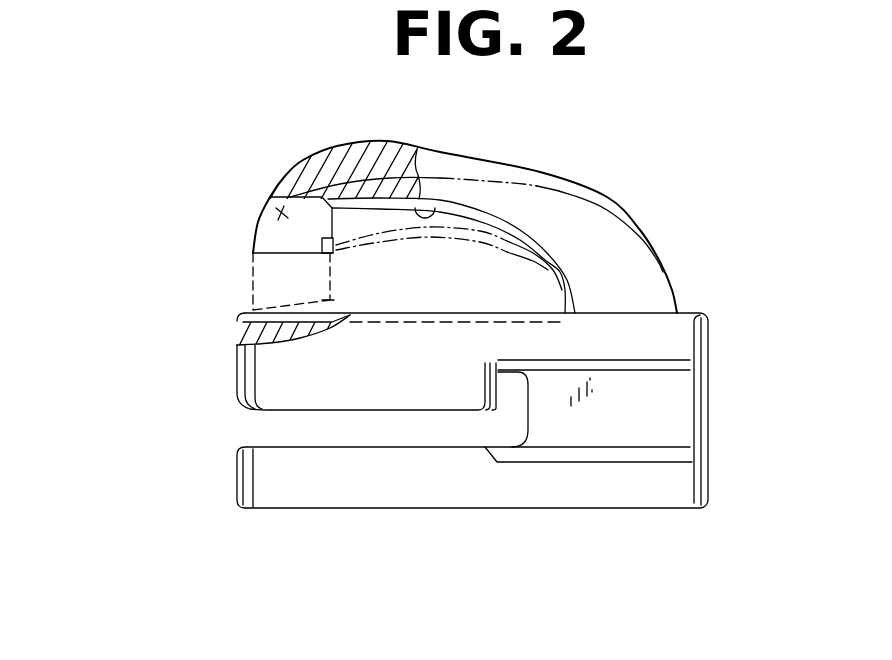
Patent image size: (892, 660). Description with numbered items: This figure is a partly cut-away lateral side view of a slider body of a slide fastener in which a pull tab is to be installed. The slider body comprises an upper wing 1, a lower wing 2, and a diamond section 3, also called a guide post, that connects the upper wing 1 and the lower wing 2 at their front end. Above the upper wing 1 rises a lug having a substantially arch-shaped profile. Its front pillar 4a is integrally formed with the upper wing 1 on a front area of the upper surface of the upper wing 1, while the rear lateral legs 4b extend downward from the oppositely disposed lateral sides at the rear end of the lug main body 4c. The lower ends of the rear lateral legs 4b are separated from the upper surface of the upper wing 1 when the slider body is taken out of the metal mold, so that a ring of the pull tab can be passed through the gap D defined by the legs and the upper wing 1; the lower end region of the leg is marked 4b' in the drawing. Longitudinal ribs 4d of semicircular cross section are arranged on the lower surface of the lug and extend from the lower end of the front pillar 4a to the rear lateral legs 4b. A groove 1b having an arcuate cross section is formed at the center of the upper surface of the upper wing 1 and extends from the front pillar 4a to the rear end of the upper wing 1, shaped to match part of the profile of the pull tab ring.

The upper wing 1 is at (695, 330).
The groove 1b is at (258, 318).
The lower wing 2 is at (633, 486).
The diamond section 3 is at (690, 414).
The front pillar 4a is at (640, 268).
The rear lateral leg 4b is at (248, 220).
The claw of hook 4b' is at (319, 177).
The lug main body 4c is at (537, 184).
The longitudinal rib 4d is at (440, 205).
The gap D is at (275, 280).